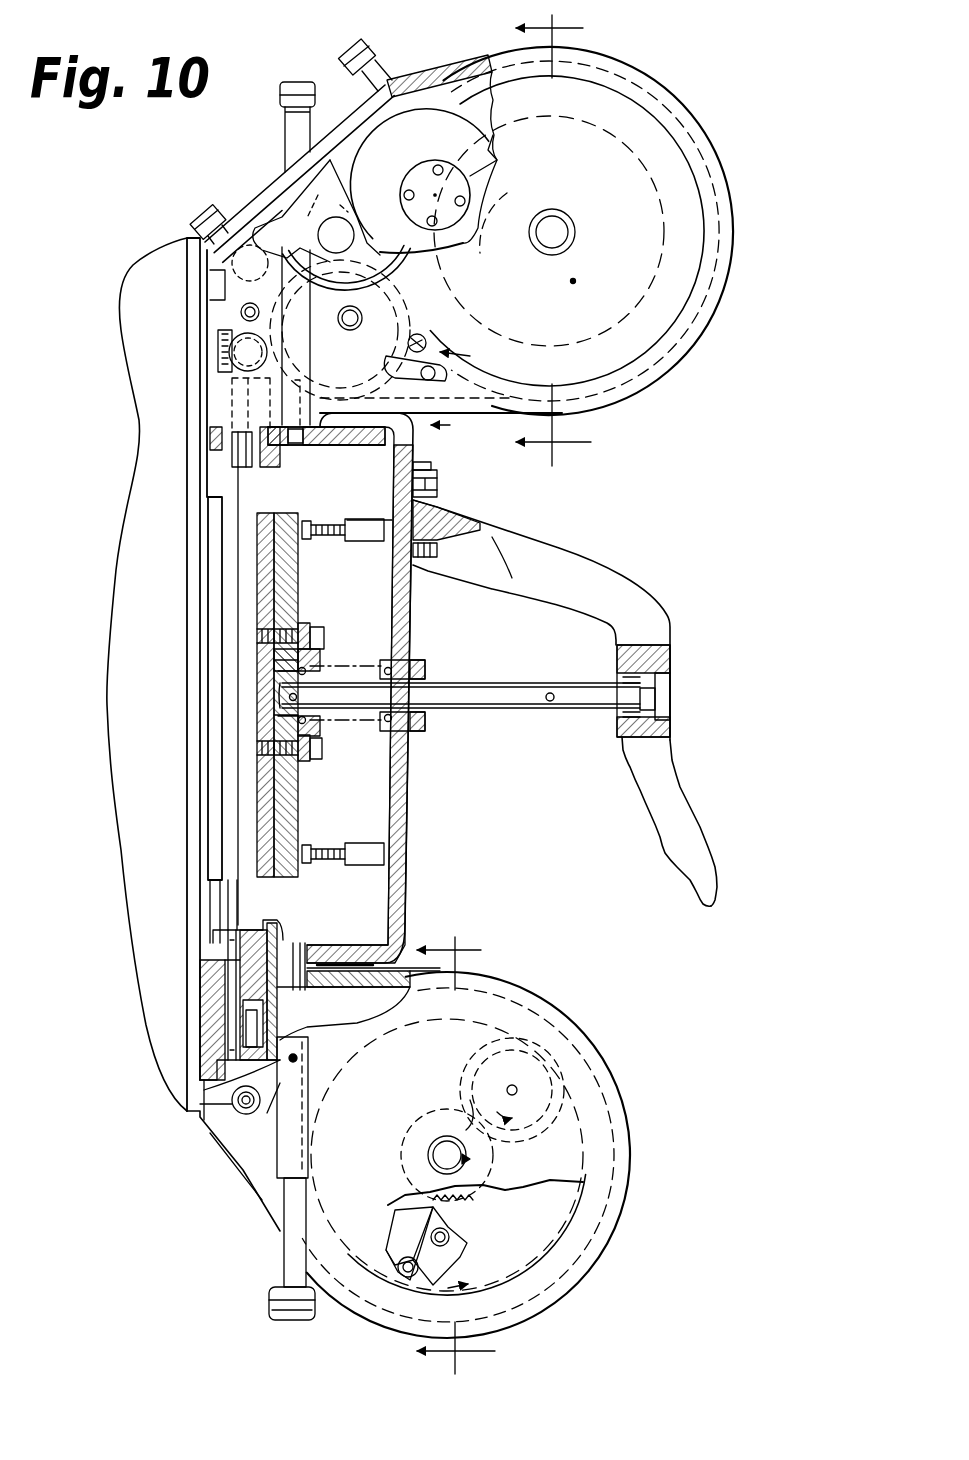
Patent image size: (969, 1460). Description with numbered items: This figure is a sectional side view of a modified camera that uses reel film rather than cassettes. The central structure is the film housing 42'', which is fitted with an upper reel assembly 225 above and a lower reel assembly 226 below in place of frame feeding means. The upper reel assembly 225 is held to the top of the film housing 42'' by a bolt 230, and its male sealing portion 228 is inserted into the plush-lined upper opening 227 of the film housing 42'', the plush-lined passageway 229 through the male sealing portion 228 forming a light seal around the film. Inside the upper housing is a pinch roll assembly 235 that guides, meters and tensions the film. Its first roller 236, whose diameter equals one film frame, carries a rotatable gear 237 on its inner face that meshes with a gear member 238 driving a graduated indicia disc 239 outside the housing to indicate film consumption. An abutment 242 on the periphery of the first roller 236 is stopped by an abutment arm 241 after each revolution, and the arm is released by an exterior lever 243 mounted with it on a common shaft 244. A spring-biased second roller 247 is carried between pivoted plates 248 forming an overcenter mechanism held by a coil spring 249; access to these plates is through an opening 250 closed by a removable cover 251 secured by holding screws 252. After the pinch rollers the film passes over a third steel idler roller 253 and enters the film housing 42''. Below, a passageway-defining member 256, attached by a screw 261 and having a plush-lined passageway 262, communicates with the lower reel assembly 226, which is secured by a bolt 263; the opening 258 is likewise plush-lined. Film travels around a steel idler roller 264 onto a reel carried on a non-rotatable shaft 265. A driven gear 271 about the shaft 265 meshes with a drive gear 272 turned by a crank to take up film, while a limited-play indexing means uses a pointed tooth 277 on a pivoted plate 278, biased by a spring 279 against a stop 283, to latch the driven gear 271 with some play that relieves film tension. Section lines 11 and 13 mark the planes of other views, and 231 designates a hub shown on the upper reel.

The bolt 230 is at (300, 60).
The holding screws 252 is at (374, 42).
The opening 250 is at (405, 68).
The removable cover 251 is at (300, 100).
The pivoted plates 248 is at (311, 173).
The gear member 238 is at (478, 128).
The second roller 247 is at (402, 142).
The graduated indicia disc 239 is at (500, 160).
The wheel hub 231 is at (576, 222).
The coil spring 249 is at (218, 208).
The first roller 236 is at (338, 290).
The rotatable gear 237 is at (545, 296).
The third steel idler roller 253 is at (232, 346).
The section line 13 is at (452, 386).
The lever 243 is at (505, 378).
The common shaft 244 is at (390, 308).
The upper opening 227 is at (208, 412).
The male sealing portion 228 is at (228, 455).
The plush-lined passageway 229 is at (244, 474).
The abutment 242 is at (326, 451).
The abutment arm 241 is at (418, 440).
The pinch roll assembly 235 is at (513, 402).
The section line 11 is at (567, 240).
The upper reel assembly 225 is at (728, 102).
The film housing 42'' is at (412, 734).
The opening 258 is at (236, 928).
The passageway-defining member 256 is at (210, 1020).
The plush-lined passageway 262 is at (283, 996).
The screw 261 is at (310, 1040).
The steel idler roller 264 is at (232, 1112).
The bolt 263 is at (284, 1236).
The non-rotatable shaft 265 is at (432, 1122).
The lower reel assembly 226 is at (608, 1022).
The drive gear 272 is at (622, 1098).
The driven gear 271 is at (495, 1175).
The pointed tooth 277 is at (462, 1229).
The stop 283 is at (415, 1225).
The pivoted plate 278 is at (458, 1232).
The spring 279 is at (452, 1243).